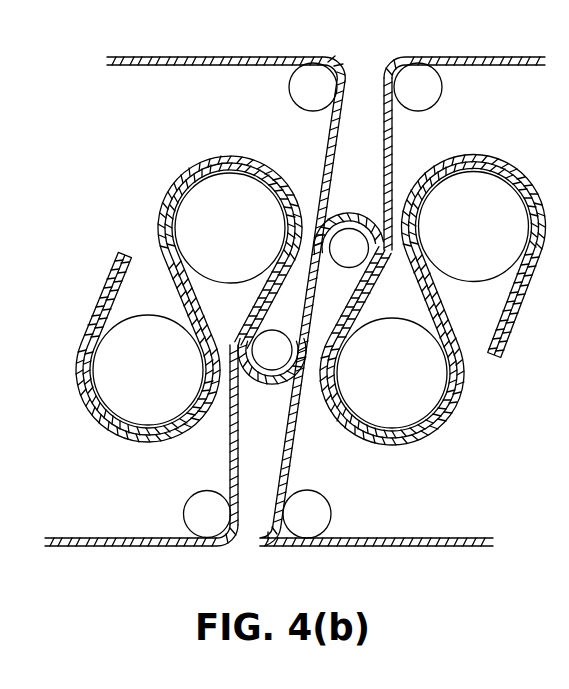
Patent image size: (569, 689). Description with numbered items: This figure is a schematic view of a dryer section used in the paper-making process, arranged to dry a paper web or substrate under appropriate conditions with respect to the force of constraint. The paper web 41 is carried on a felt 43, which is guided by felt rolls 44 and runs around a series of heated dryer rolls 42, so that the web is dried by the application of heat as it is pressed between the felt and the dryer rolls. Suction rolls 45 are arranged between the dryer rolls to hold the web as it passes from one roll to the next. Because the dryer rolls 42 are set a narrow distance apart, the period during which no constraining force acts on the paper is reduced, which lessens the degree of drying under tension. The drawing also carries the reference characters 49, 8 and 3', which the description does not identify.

The felt 43 is at (203, 57).
The upper movable plate 49 is at (496, 57).
The felt rolls 44 is at (290, 96).
The dryer rolls 42 is at (148, 315).
The suction rolls 45 is at (294, 335).
The paper web 41 is at (263, 387).
The lower fixed plate 3' is at (141, 514).
The lower movable plate 8 is at (418, 538).